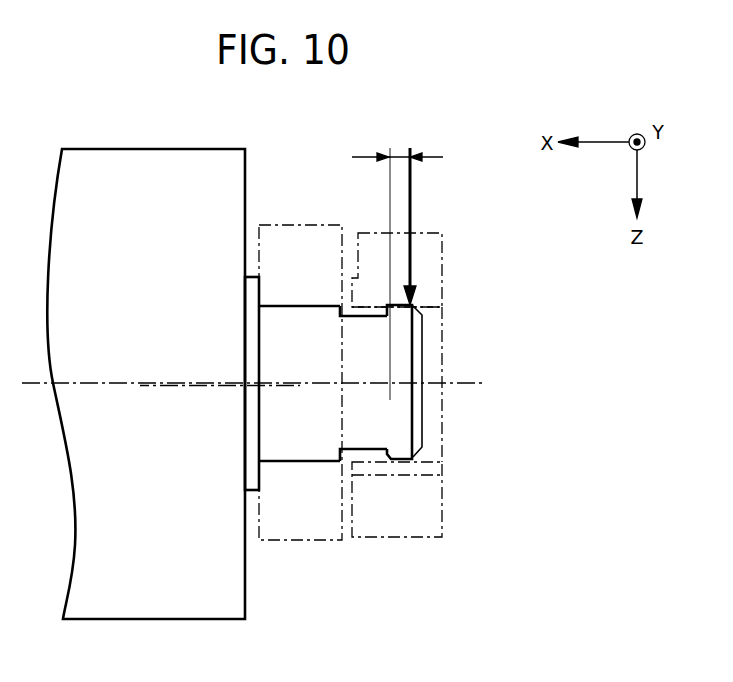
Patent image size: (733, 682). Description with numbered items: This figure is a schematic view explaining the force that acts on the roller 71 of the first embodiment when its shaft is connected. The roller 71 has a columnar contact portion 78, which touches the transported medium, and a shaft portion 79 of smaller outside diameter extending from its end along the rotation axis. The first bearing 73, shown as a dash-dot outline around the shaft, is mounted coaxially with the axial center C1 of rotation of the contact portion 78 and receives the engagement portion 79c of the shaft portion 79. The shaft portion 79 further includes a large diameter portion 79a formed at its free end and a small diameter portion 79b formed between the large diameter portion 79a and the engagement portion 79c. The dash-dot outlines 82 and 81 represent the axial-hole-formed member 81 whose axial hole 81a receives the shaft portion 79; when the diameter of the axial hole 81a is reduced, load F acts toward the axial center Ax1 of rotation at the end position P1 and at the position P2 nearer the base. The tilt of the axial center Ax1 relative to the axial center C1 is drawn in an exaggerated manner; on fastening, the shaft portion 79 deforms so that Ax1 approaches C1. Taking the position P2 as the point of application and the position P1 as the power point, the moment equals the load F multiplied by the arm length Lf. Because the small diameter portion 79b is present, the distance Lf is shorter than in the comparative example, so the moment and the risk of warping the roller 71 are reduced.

The roller 71 is at (108, 130).
The contact portion 78 is at (223, 147).
The first bearing 73 is at (300, 223).
The shaft portion 79 is at (378, 366).
The large diameter portion 79a is at (402, 460).
The small diameter portion 79b is at (362, 451).
The engagement portion 79c is at (292, 463).
The upper engagement member 82 is at (428, 233).
The axial-hole-formed member 81 is at (445, 505).
The axial hole 81a is at (430, 307).
The end position P1 is at (413, 303).
The position P2 is at (386, 457).
The load F is at (412, 193).
The distance Lf is at (393, 155).
The axial center of rotation of the contact portion C1 is at (92, 385).
The axial center of rotation of the shaft portion Ax1 is at (162, 387).